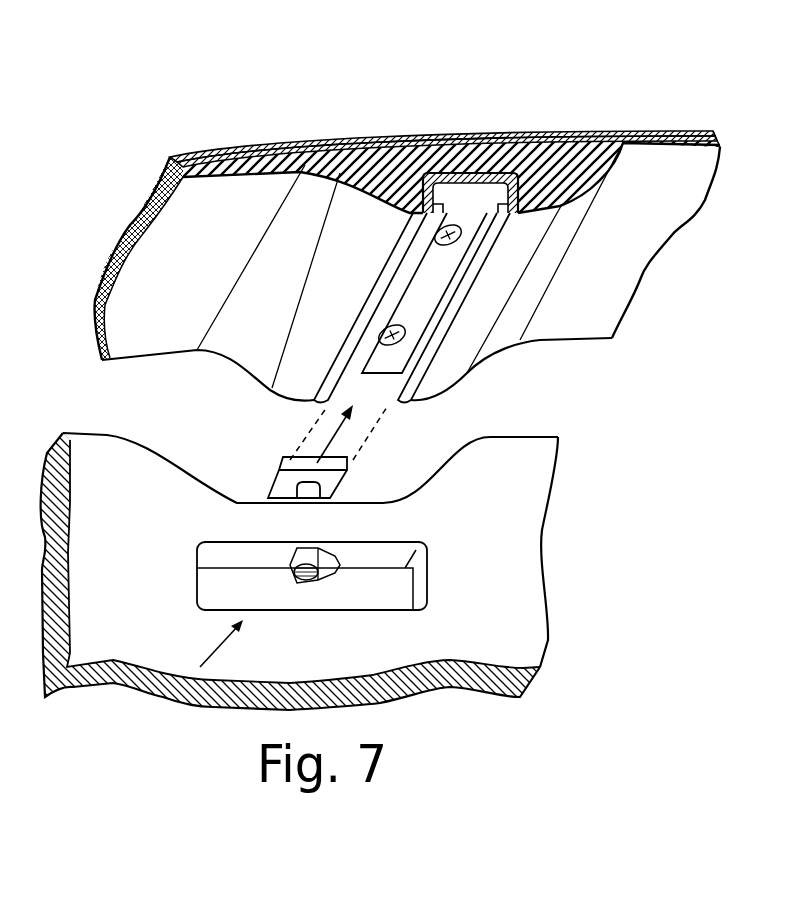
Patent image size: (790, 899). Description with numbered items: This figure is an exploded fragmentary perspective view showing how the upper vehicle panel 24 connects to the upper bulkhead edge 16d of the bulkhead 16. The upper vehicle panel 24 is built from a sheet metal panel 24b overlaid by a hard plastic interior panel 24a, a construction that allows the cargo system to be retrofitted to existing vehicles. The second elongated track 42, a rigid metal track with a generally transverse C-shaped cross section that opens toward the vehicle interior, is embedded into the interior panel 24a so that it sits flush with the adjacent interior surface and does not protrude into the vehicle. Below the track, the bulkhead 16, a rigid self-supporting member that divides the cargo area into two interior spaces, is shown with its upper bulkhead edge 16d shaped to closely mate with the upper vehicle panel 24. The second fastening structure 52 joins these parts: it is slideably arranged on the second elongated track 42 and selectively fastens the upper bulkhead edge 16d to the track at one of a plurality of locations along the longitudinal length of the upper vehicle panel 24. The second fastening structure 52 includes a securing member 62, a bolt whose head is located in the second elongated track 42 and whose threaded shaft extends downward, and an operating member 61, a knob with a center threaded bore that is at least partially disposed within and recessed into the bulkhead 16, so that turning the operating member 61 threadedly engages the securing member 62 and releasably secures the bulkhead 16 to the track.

The upper vehicle panel 24 is at (645, 52).
The hard plastic interior panel 24a is at (548, 133).
The sheet metal panel 24b is at (580, 133).
The second elongated track 42 is at (453, 173).
The securing member 62 is at (267, 475).
The upper bulkhead edge 16d is at (494, 437).
The bulkhead 16 is at (560, 555).
The operating member 61 is at (340, 560).
The second fastening structure 52 is at (200, 667).